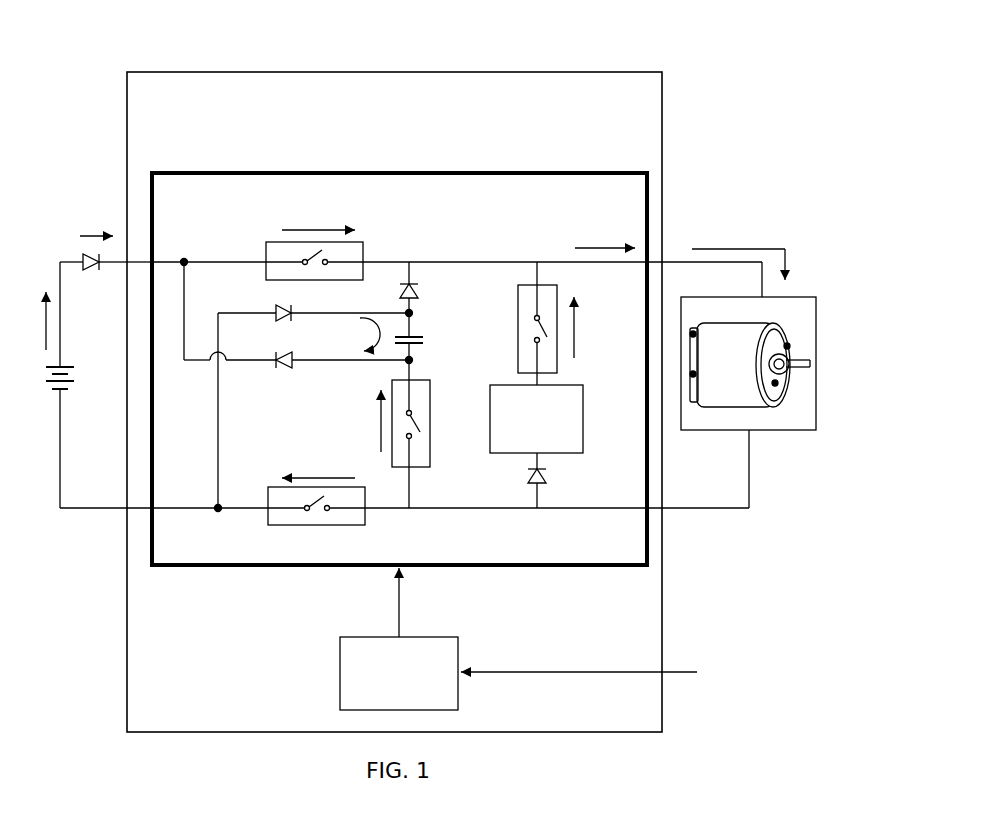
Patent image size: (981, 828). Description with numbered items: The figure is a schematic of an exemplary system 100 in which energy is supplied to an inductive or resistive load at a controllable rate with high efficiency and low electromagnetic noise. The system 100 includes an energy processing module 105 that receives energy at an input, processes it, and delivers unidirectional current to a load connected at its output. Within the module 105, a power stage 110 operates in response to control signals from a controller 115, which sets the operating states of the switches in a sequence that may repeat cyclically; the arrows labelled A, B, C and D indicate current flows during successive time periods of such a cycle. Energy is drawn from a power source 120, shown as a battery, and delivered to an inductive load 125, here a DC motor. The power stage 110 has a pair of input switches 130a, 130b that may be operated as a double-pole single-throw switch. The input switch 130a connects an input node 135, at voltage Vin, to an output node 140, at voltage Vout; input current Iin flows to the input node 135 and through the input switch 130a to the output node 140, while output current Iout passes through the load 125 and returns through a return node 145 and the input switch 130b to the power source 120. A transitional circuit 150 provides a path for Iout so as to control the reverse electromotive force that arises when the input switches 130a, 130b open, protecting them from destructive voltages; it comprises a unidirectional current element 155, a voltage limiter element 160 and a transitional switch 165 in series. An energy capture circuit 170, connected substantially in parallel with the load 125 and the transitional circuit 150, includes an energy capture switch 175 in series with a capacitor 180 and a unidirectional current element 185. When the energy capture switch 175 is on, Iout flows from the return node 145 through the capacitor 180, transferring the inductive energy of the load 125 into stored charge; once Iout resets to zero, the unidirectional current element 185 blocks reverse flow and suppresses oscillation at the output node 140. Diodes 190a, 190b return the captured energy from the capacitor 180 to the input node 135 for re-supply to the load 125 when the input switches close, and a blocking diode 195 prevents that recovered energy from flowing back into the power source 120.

The system 100 is at (122, 52).
The energy processing module 105 is at (453, 402).
The power stage 110 is at (399, 369).
The controller 115 is at (559, 639).
The power source 120 is at (60, 392).
The inductive load 125 is at (748, 370).
The input switch 130a is at (362, 242).
The input switch 130b is at (366, 525).
The input node 135 is at (256, 264).
The output node 140 is at (448, 262).
The return node 145 is at (478, 508).
The transitional circuit 150 is at (590, 285).
The unidirectional current element 155 is at (527, 478).
The voltage limiter element 160 is at (490, 386).
The transitional switch 165 is at (518, 350).
The energy capture circuit 170 is at (350, 410).
The energy capture switch 175 is at (430, 466).
The capacitor 180 is at (418, 336).
The unidirectional current element 185 is at (420, 292).
The diode 190a is at (295, 304).
The diode 190b is at (292, 366).
The blocking diode 195 is at (83, 258).